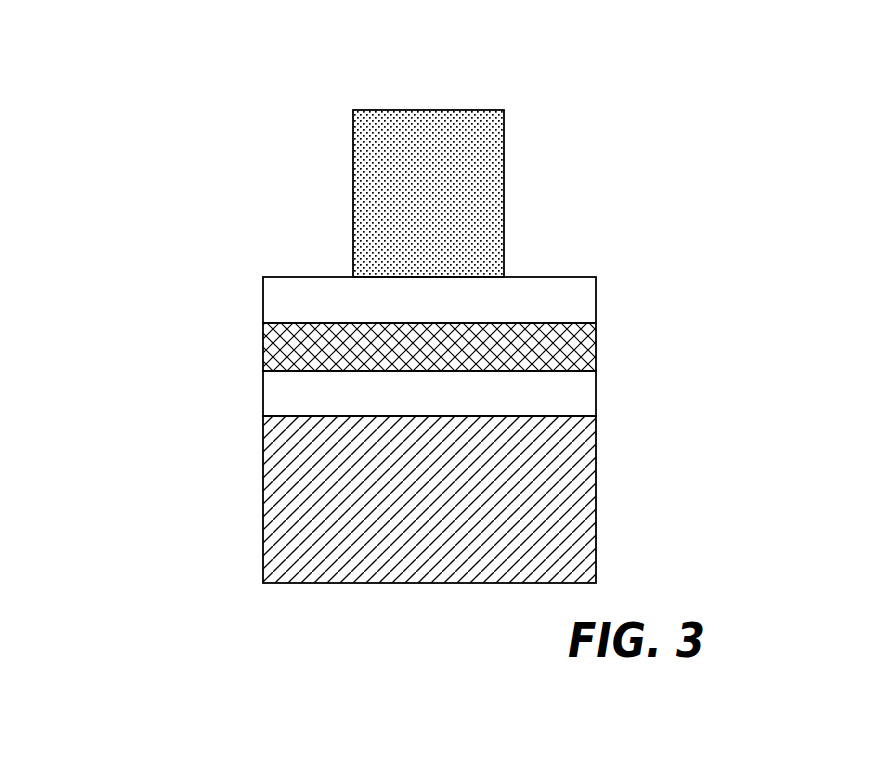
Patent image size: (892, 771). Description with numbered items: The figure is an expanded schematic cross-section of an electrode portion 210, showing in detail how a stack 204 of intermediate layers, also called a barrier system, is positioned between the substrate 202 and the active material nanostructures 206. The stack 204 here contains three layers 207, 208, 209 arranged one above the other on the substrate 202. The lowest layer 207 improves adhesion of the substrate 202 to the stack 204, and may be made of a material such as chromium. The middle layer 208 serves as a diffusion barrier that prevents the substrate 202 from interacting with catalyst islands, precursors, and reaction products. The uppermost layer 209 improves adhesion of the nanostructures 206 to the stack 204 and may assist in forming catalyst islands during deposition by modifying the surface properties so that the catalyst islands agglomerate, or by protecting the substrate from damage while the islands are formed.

The electrode portion 210 is at (270, 113).
The active material nanostructures 206 is at (353, 195).
The stack 204 is at (240, 418).
The layer 209 is at (597, 300).
The layer 208 is at (597, 346).
The layer 207 is at (597, 393).
The substrate 202 is at (262, 500).